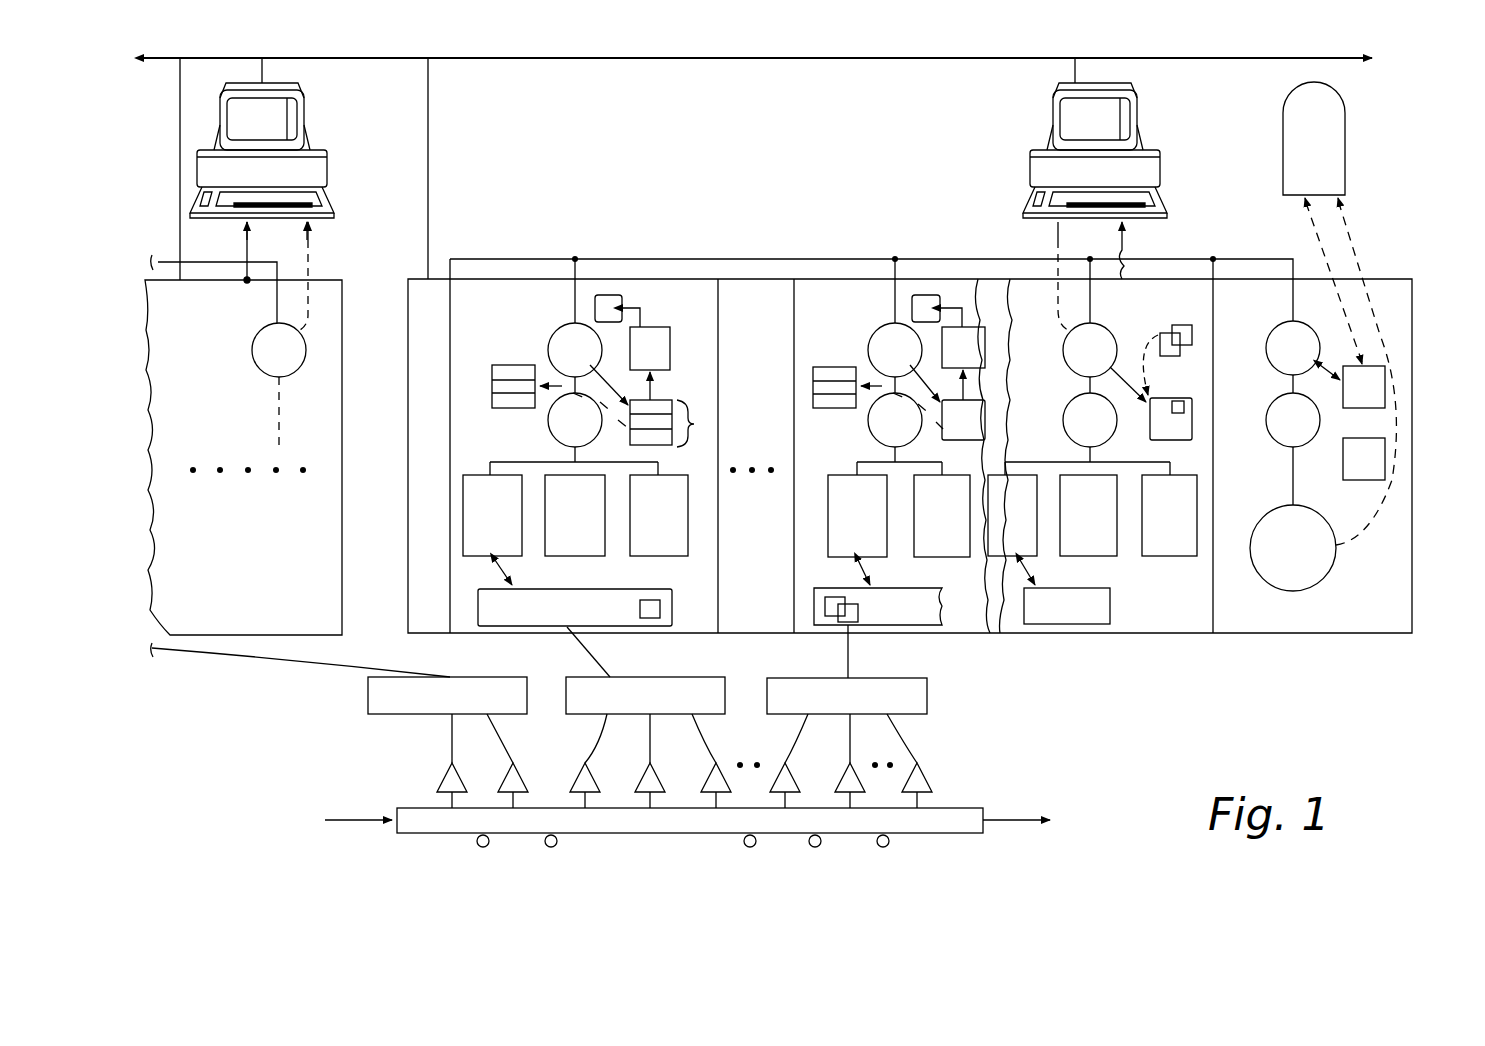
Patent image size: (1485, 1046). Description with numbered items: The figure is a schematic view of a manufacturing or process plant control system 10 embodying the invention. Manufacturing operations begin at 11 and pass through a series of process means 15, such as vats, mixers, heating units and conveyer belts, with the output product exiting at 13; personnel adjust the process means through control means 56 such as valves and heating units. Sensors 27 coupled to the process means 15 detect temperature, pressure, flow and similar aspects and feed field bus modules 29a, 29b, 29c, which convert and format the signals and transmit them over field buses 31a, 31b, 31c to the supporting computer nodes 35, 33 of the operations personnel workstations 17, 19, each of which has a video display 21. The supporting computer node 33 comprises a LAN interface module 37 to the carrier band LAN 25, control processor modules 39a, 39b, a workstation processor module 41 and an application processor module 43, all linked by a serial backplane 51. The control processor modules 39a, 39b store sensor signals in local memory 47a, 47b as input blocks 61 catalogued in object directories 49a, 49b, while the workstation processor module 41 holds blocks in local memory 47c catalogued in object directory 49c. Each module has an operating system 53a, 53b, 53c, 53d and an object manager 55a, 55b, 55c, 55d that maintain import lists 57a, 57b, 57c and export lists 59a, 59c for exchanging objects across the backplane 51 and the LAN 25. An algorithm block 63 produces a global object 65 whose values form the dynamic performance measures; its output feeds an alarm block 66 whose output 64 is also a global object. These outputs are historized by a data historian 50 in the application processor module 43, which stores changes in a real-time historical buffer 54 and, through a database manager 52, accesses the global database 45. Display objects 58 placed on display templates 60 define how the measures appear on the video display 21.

The plant control system 10 is at (1180, 708).
The beginning of manufacturing operations 11 is at (355, 815).
The exit of manufacturing operations 13 is at (993, 818).
The process means 15 is at (652, 823).
The operations personnel workstation 17 is at (355, 142).
The operations personnel workstation 19 is at (1040, 128).
The video display 21 is at (325, 118).
The carrier band local area network 25 is at (697, 62).
The sensors 27 is at (575, 775).
The field bus module 29a is at (468, 707).
The field bus module 29b is at (666, 707).
The field bus module 29c is at (867, 707).
The field bus 31a is at (345, 658).
The field bus 31b is at (612, 662).
The field bus 31c is at (850, 656).
The supporting computer node 33 is at (994, 645).
The supporting computer node 35 is at (346, 578).
The LAN interface module 37 is at (438, 441).
The control processor module 39a is at (500, 316).
The control processor module 39b is at (846, 316).
The workstation processor module 41 is at (1172, 617).
The application processor module 43 is at (1380, 617).
The global database 45 is at (1326, 141).
The local memory 47a is at (596, 617).
The local memory 47b is at (918, 617).
The local memory 47c is at (1088, 616).
The object directory 49a is at (510, 522).
The object directory 49b is at (875, 522).
The object directory 49c is at (1032, 522).
The data historian 50 is at (1323, 394).
The serial backplane 51 is at (742, 262).
The database manager 52 is at (1377, 399).
The operating system 53a is at (594, 362).
The operating system 53b is at (914, 362).
The operating system 53c is at (1109, 362).
The operating system 53d is at (1312, 360).
The real-time historical buffer 54 is at (1377, 471).
The object manager 55a is at (594, 432).
The object manager 55b is at (914, 432).
The object manager 55c is at (1109, 432).
The object manager 55d is at (1312, 432).
The control means 56 is at (490, 845).
The import list 57a is at (593, 522).
The import list 57b is at (960, 522).
The import list 57c is at (1108, 522).
The display object 58 is at (1186, 395).
The export list 59a is at (676, 522).
The export list 59c is at (1188, 522).
The display template 60 is at (1180, 425).
The input block 61 is at (650, 611).
The algorithm block 63 is at (695, 424).
The alarm block output 64 is at (610, 298).
The global object 65 is at (515, 410).
The alarm block 66 is at (664, 360).